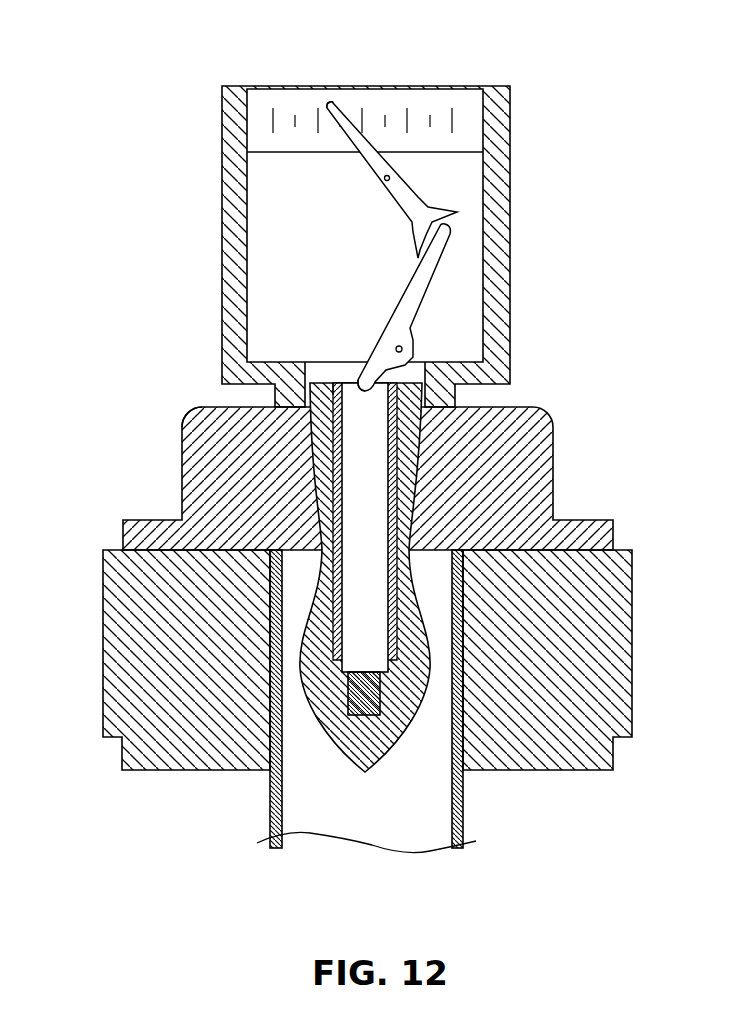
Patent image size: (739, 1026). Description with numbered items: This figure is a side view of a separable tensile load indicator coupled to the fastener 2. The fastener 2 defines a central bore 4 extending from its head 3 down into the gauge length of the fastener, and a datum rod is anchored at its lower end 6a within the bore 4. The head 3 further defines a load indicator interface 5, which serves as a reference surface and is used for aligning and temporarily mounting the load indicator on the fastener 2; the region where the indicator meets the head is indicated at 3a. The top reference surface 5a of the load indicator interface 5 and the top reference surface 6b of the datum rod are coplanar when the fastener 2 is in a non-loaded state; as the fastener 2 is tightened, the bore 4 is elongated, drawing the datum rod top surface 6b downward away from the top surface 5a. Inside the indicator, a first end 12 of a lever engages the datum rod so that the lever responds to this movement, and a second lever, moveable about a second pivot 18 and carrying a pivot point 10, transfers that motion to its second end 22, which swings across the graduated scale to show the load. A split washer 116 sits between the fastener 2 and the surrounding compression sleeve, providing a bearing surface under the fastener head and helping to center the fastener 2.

The fastener 2 is at (99, 464).
The head 3 is at (553, 478).
The body shoulder 3a is at (207, 404).
The central bore 4 is at (345, 590).
The load indicator interface 5 is at (415, 282).
The top reference surface 5a is at (313, 406).
The lower end 6a is at (368, 692).
The top reference surface 6b is at (316, 440).
The pivot 10 is at (404, 343).
The first end 12 is at (355, 372).
The second pivot 18 is at (397, 172).
The second end 22 is at (330, 105).
The split washer 116 is at (367, 152).